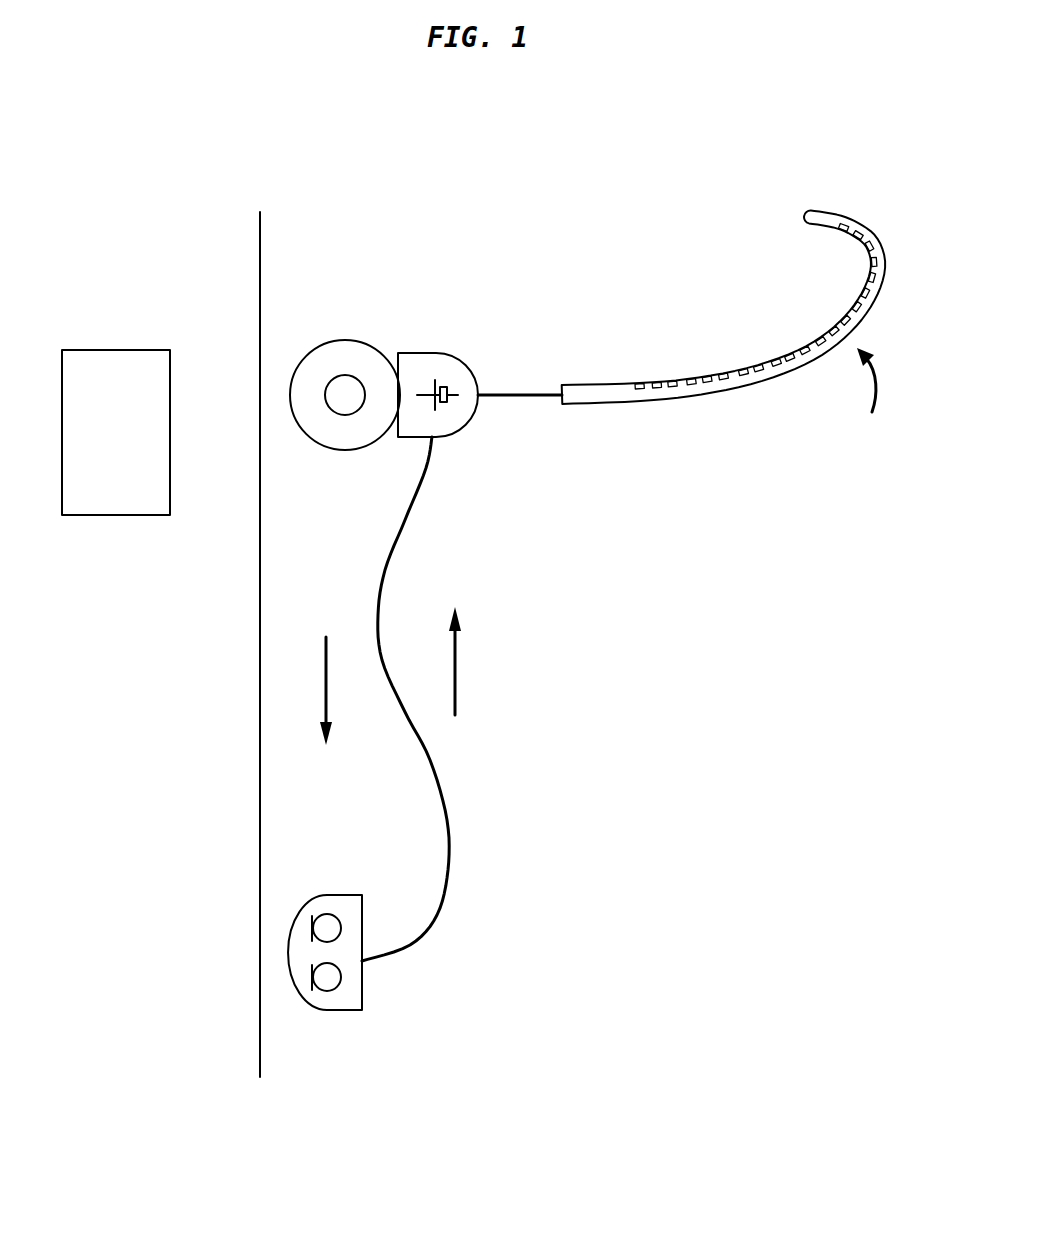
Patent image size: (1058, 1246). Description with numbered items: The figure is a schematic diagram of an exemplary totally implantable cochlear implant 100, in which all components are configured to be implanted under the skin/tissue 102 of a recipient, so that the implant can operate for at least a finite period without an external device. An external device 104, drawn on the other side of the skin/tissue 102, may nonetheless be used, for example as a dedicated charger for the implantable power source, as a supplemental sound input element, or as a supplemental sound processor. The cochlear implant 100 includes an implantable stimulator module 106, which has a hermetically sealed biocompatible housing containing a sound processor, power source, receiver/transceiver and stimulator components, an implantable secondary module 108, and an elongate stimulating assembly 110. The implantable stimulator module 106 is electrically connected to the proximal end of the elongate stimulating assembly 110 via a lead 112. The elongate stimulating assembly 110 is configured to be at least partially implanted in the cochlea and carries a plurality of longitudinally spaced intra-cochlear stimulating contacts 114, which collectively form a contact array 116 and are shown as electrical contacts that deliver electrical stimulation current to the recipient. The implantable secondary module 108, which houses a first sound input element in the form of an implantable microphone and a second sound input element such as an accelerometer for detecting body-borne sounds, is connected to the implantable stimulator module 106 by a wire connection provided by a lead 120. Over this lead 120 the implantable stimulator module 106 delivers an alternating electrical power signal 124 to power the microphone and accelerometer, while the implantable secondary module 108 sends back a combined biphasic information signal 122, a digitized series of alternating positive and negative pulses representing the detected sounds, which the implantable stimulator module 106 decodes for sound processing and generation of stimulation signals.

The cochlear implant 100 is at (622, 163).
The skin/tissue 102 is at (260, 258).
The external device 104 is at (118, 515).
The implantable stimulator module 106 is at (458, 355).
The implantable secondary module 108 is at (409, 972).
The elongate stimulating assembly 110 is at (723, 354).
The lead 112 is at (522, 397).
The intra-cochlear stimulating contacts 114 is at (638, 384).
The contact array 116 is at (871, 395).
The lead 120 is at (421, 498).
The biphasic information signal 122 is at (458, 666).
The power signal 124 is at (323, 657).